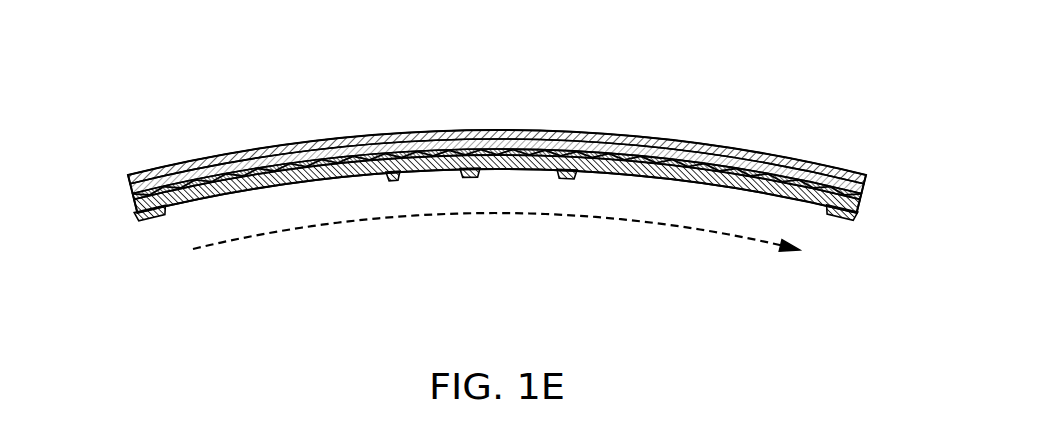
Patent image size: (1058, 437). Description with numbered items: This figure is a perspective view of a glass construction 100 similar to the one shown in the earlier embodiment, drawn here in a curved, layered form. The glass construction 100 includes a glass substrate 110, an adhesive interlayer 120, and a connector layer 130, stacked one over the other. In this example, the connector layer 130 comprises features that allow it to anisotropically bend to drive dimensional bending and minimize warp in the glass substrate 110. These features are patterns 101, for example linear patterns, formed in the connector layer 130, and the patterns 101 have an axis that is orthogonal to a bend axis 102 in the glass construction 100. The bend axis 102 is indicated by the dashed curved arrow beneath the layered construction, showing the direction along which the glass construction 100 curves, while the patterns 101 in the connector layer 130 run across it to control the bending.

The glass construction 100 is at (594, 96).
The patterns 101 is at (287, 161).
The bend axis 102 is at (482, 215).
The glass substrate 110 is at (864, 179).
The adhesive interlayer 120 is at (861, 189).
The connector layer 130 is at (136, 194).